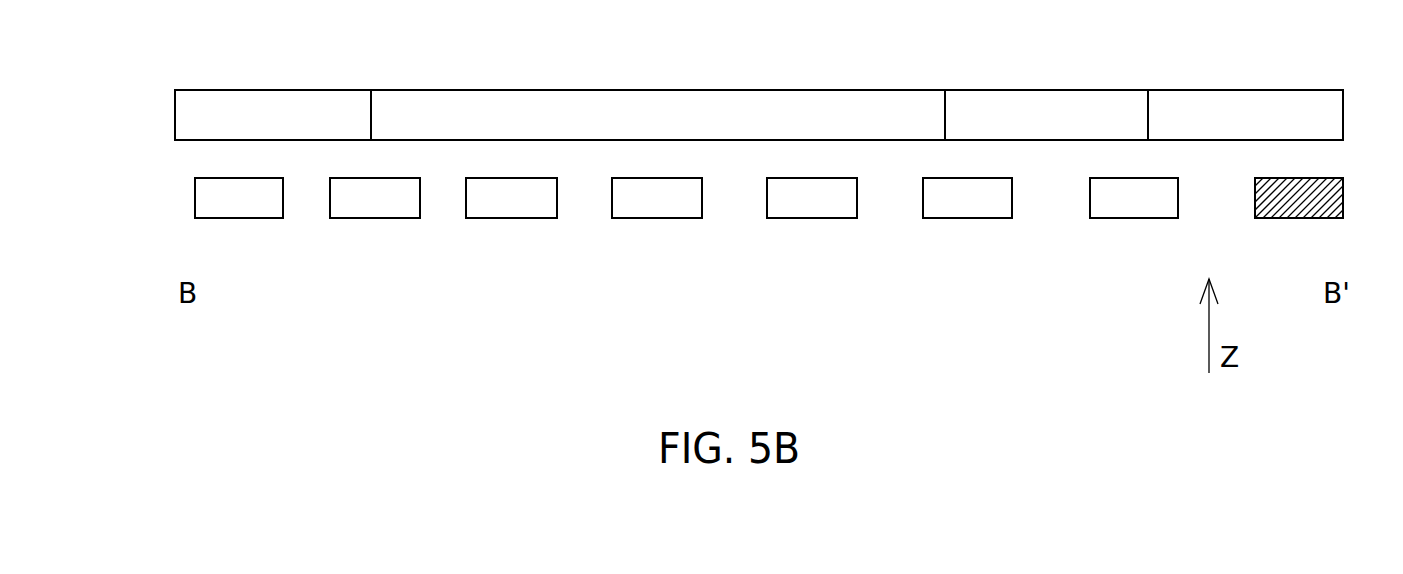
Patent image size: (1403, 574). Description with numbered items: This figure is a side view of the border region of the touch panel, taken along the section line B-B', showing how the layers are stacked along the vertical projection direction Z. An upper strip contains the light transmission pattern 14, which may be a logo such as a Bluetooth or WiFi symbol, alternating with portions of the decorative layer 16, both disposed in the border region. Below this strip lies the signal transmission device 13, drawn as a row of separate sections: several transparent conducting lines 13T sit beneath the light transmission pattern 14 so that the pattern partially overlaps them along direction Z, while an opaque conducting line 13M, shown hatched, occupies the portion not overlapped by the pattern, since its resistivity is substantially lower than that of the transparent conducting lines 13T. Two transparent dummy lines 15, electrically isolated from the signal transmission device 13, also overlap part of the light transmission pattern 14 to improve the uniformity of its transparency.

The signal transmission device 13 is at (920, 228).
The transparent conducting line 13T is at (472, 206).
The opaque conducting line 13M is at (1297, 203).
The light transmission pattern 14 is at (288, 130).
The transparent dummy line 15 is at (226, 205).
The decorative layer 16 is at (658, 110).